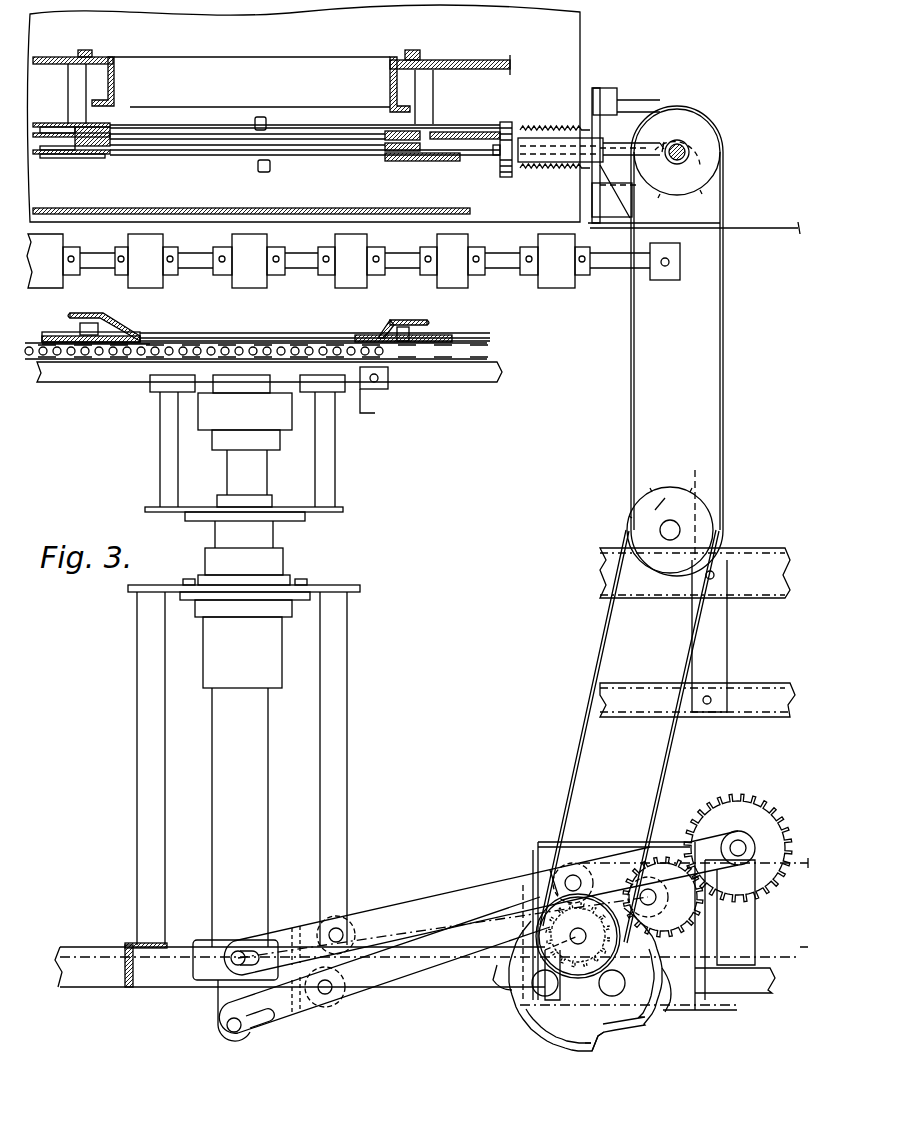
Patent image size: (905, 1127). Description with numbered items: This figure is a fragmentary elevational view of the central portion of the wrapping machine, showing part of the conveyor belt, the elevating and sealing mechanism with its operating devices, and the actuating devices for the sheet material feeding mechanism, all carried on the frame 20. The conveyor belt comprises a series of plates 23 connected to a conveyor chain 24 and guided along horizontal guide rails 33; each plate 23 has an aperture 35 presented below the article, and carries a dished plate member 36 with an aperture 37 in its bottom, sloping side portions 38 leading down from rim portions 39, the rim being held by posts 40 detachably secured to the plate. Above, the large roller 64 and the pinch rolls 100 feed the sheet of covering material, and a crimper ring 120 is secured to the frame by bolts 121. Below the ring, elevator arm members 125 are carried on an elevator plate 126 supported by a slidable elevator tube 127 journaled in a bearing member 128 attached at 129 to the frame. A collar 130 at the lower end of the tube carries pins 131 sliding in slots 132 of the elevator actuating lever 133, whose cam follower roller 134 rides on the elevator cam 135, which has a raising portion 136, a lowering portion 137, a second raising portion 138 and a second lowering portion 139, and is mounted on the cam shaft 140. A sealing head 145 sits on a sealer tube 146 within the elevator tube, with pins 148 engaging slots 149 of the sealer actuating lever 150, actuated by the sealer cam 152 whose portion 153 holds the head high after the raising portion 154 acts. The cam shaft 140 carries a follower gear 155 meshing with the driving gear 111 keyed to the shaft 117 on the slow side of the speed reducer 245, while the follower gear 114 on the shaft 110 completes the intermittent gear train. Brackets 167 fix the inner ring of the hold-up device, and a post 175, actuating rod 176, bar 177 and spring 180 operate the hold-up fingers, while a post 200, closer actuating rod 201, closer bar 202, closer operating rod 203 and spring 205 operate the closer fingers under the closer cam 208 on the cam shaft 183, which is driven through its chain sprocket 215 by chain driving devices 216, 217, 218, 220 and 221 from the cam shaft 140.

The frame 20 is at (137, 752).
The plates 23 is at (455, 347).
The conveyor chain 24 is at (487, 358).
The horizontal guide rails 33 is at (470, 384).
The aperture 35 is at (148, 346).
The dished plate members 36 is at (125, 338).
The aperture 37 is at (160, 340).
The sloping side portions 38 is at (385, 320).
The rim portions 39 is at (68, 313).
The posts 40 is at (80, 328).
The large roller 64 is at (581, 46).
The pinch rolls 100 is at (165, 282).
The shaft 110 is at (742, 840).
The driving gear 111 is at (680, 905).
The follower gear 114 is at (718, 812).
The shaft 117 is at (650, 888).
The crimper ring 120 is at (392, 92).
The bolts 121 is at (90, 51).
The elevator arm members 125 is at (160, 450).
The elevator plate 126 is at (310, 514).
The elevator tube 127 is at (268, 762).
The bearing member 128 is at (270, 644).
The attachment 129 is at (305, 580).
The collar 130 is at (200, 990).
The pins 131 is at (242, 955).
The slots 132 is at (256, 953).
The elevator actuating lever 133 is at (395, 907).
The cam follower roller 134 is at (552, 876).
The elevator cam 135 is at (545, 1030).
The cam portion 136 is at (572, 1052).
The cam portion 137 is at (605, 1052).
The cam portion 138 is at (668, 1012).
The cam portion 139 is at (705, 1000).
The cam shaft 140 is at (512, 990).
The sealing head 145 is at (283, 413).
The sealer tube 146 is at (268, 468).
The pins 148 is at (240, 1032).
The slots 149 is at (265, 1019).
The sealer actuating lever 150 is at (360, 975).
The sealer cam 152 is at (652, 1040).
The cam portion 153 is at (622, 1040).
The cam portion 154 is at (590, 1053).
The follower gear 155 is at (500, 895).
The brackets 167 is at (75, 88).
The post 175 is at (262, 117).
The actuating rod 176 is at (305, 130).
The bar 177 is at (510, 124).
The spring 180 is at (550, 132).
The cam shaft 183 is at (686, 146).
The post 200 is at (270, 172).
The closer actuating rod 201 is at (340, 160).
The closer bar 202 is at (506, 178).
The closer operating rod 203 is at (614, 153).
The spring 205 is at (552, 170).
The closer cam 208 is at (684, 125).
The chain sprocket 215 is at (716, 186).
The chain driving device 216 is at (722, 322).
The chain driving device 217 is at (700, 514).
The chain driving device 218 is at (681, 532).
The chain driving device 220 is at (605, 645).
The chain driving device 221 is at (530, 1015).
The speed reducer 245 is at (610, 840).